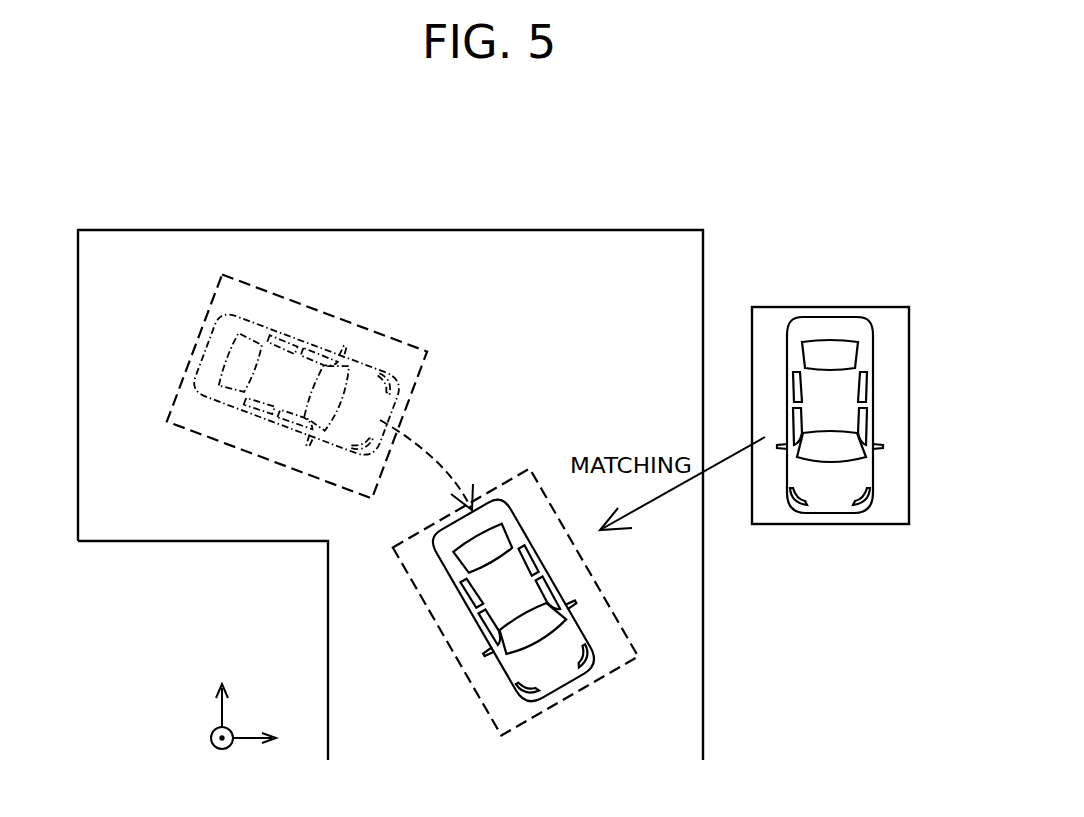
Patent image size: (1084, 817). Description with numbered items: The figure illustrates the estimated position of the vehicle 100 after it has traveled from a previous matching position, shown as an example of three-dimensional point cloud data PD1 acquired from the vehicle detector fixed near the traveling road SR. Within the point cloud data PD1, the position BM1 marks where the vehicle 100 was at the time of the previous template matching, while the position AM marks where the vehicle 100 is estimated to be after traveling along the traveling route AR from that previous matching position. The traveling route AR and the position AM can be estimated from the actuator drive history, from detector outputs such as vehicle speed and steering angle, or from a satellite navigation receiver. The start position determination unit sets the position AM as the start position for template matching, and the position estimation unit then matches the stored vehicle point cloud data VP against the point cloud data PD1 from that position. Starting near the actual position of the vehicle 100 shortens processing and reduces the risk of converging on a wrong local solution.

The traveling road SR is at (122, 248).
The position at the time of previous matching BM1 is at (317, 310).
The traveling route AR is at (434, 455).
The position after traveling AM is at (443, 632).
The vehicle 100 is at (543, 572).
The vehicle point cloud data VP is at (840, 318).
The three-dimensional point cloud data PD1 is at (743, 220).